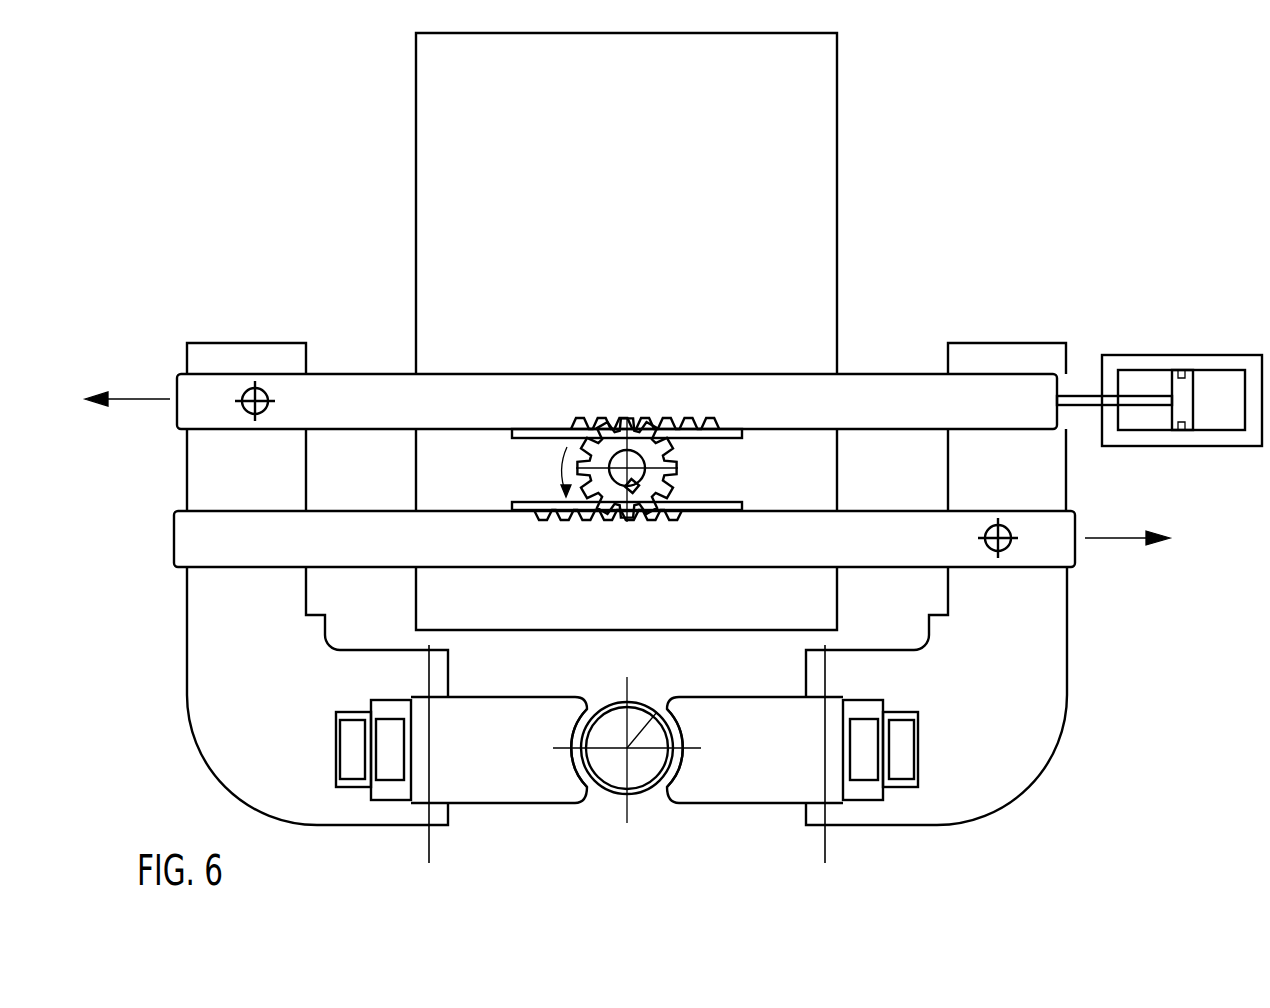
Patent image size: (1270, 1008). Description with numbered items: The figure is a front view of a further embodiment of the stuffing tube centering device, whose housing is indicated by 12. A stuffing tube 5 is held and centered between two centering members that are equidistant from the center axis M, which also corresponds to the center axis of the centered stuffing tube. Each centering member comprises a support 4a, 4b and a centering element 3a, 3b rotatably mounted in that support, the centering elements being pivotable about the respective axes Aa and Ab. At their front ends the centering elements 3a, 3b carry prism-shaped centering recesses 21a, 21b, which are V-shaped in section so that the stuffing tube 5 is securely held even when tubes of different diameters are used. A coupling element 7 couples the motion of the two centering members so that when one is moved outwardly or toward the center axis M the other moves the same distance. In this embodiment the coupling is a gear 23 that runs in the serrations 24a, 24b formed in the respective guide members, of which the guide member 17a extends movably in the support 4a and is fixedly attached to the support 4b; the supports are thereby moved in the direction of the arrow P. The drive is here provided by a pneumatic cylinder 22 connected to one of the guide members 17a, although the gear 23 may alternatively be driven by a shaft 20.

The housing 12 is at (838, 72).
The coupling element 7 is at (707, 413).
The guide member 17a is at (174, 540).
The serration 24a is at (582, 520).
The serration 24b is at (585, 430).
The shaft 20 is at (640, 484).
The gear 23 is at (668, 462).
The pneumatic cylinder 22 is at (1220, 352).
The support 4a is at (187, 672).
The support 4b is at (1067, 672).
The axis Aa is at (430, 668).
The axis Ab is at (825, 668).
The centering element 3a is at (512, 697).
The centering element 3b is at (723, 697).
The stuffing tube 5 is at (602, 700).
The center axis M is at (657, 712).
The centering recess 21a is at (592, 790).
The centering recess 21b is at (663, 790).
The arrow P is at (627, 453).